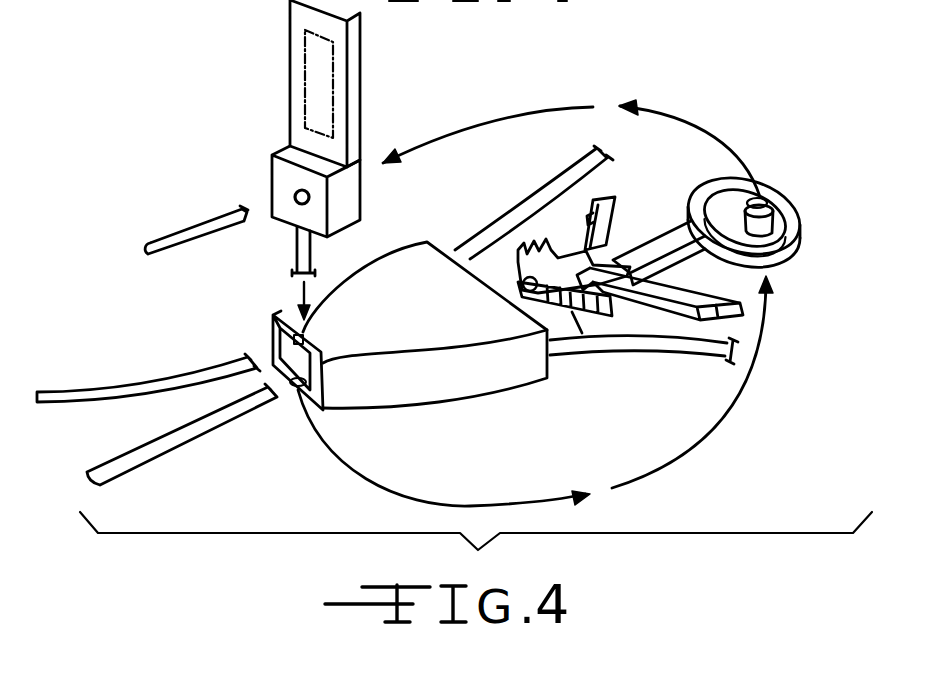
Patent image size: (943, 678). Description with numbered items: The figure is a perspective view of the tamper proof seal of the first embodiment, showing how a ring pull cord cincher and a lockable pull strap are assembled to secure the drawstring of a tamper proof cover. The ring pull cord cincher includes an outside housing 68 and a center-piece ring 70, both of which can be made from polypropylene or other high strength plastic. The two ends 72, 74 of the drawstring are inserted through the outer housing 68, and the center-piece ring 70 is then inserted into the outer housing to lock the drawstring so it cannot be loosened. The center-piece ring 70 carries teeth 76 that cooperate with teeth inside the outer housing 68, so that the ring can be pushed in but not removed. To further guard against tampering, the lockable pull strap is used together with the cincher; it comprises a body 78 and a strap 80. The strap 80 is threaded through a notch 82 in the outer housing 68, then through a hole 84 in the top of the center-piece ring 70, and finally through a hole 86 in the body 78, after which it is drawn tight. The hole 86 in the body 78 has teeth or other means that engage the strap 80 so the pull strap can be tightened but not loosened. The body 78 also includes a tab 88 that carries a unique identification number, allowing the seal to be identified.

The outside housing 68 is at (400, 373).
The center-piece ring 70 is at (789, 258).
The end of the drawstring 72 is at (90, 392).
The end of the drawstring 74 is at (119, 465).
The teeth 76 is at (592, 296).
The body 78 is at (289, 198).
The strap 80 is at (297, 245).
The notch 82 is at (303, 334).
The hole 84 is at (762, 200).
The hole 86 is at (277, 188).
The tab 88 is at (303, 82).